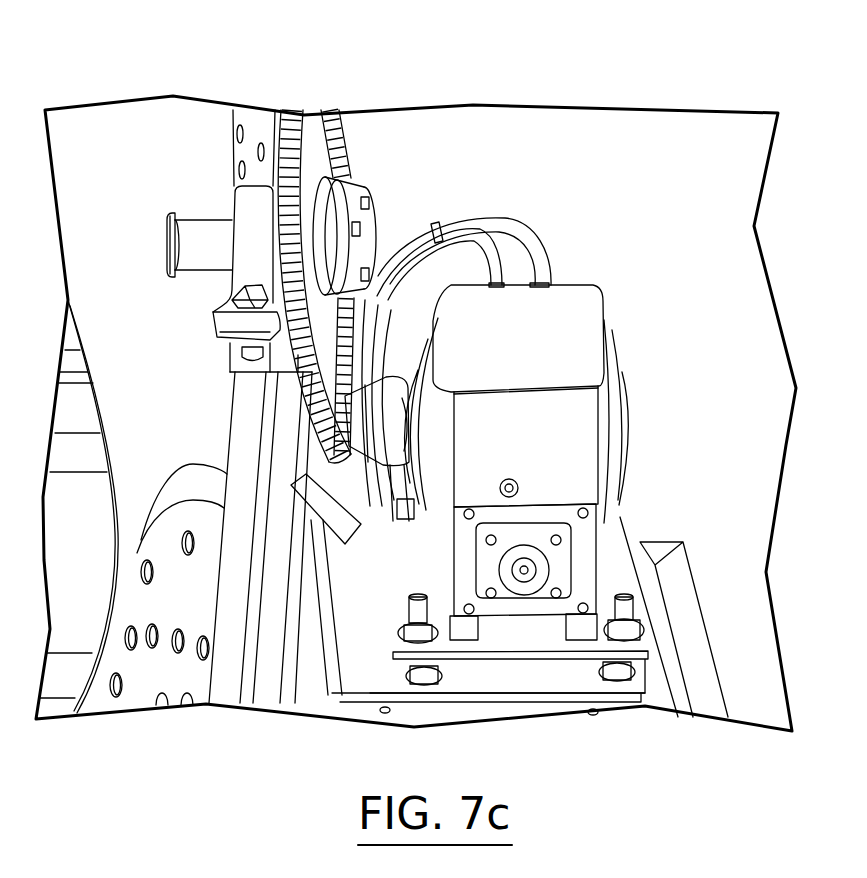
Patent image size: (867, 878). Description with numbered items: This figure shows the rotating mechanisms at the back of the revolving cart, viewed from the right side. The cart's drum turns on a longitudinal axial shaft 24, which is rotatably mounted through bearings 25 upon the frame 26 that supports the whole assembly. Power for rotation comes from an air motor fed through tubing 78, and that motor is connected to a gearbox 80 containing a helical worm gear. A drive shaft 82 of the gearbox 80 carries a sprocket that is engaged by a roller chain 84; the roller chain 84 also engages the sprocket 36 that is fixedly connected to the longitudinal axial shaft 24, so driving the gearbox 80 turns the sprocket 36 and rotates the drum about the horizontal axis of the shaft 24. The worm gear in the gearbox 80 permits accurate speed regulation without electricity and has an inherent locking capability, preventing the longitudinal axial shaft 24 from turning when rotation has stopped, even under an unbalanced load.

The longitudinal axial shaft 24 is at (198, 257).
The bearings 25 is at (240, 206).
The frame 26 is at (222, 685).
The sprocket 36 is at (327, 165).
The tubing 78 is at (472, 216).
The gearbox 80 is at (535, 441).
The drive shaft 82 is at (406, 413).
The roller chain 84 is at (284, 168).